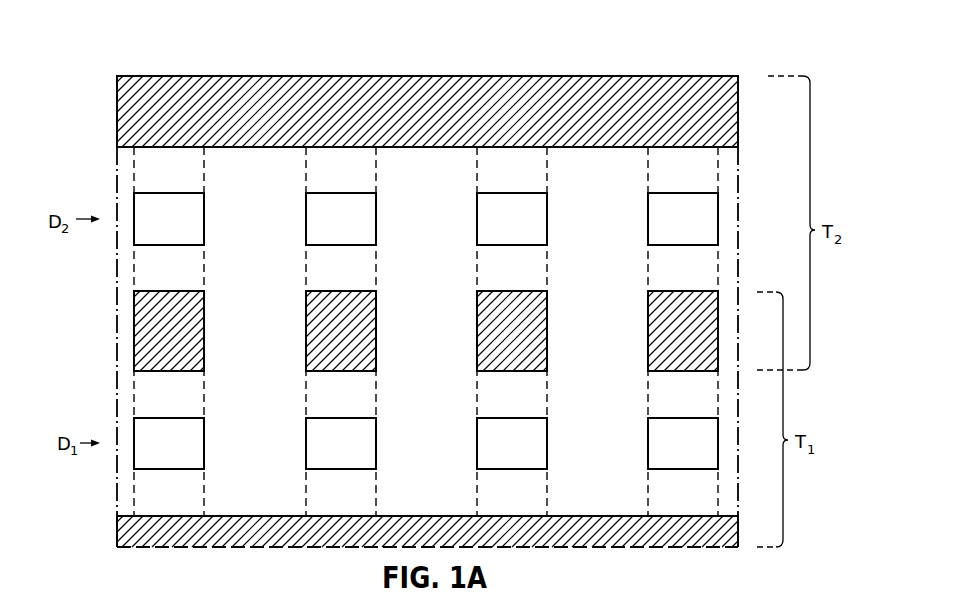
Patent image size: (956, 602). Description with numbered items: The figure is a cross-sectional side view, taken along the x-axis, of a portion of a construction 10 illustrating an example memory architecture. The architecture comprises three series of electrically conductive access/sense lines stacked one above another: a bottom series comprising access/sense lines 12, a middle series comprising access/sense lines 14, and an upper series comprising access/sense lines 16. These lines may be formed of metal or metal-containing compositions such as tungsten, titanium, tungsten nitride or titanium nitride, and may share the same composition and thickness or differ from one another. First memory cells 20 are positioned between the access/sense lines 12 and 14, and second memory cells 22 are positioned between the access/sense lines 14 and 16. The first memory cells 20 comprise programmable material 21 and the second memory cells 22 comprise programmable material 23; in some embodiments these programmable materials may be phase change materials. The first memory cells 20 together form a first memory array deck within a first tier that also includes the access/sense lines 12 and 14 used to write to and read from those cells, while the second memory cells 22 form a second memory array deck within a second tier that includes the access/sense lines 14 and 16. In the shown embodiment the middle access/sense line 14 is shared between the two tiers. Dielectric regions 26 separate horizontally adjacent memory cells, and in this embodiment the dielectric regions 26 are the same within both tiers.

The construction 10 is at (727, 55).
The access/sense line 12 is at (112, 530).
The access/sense line 14 is at (142, 330).
The access/sense line 16 is at (112, 108).
The first memory cell 20 is at (208, 442).
The programmable material 21 is at (159, 455).
The second memory cell 22 is at (208, 216).
The programmable material 23 is at (159, 231).
The dielectric region 26 is at (245, 295).